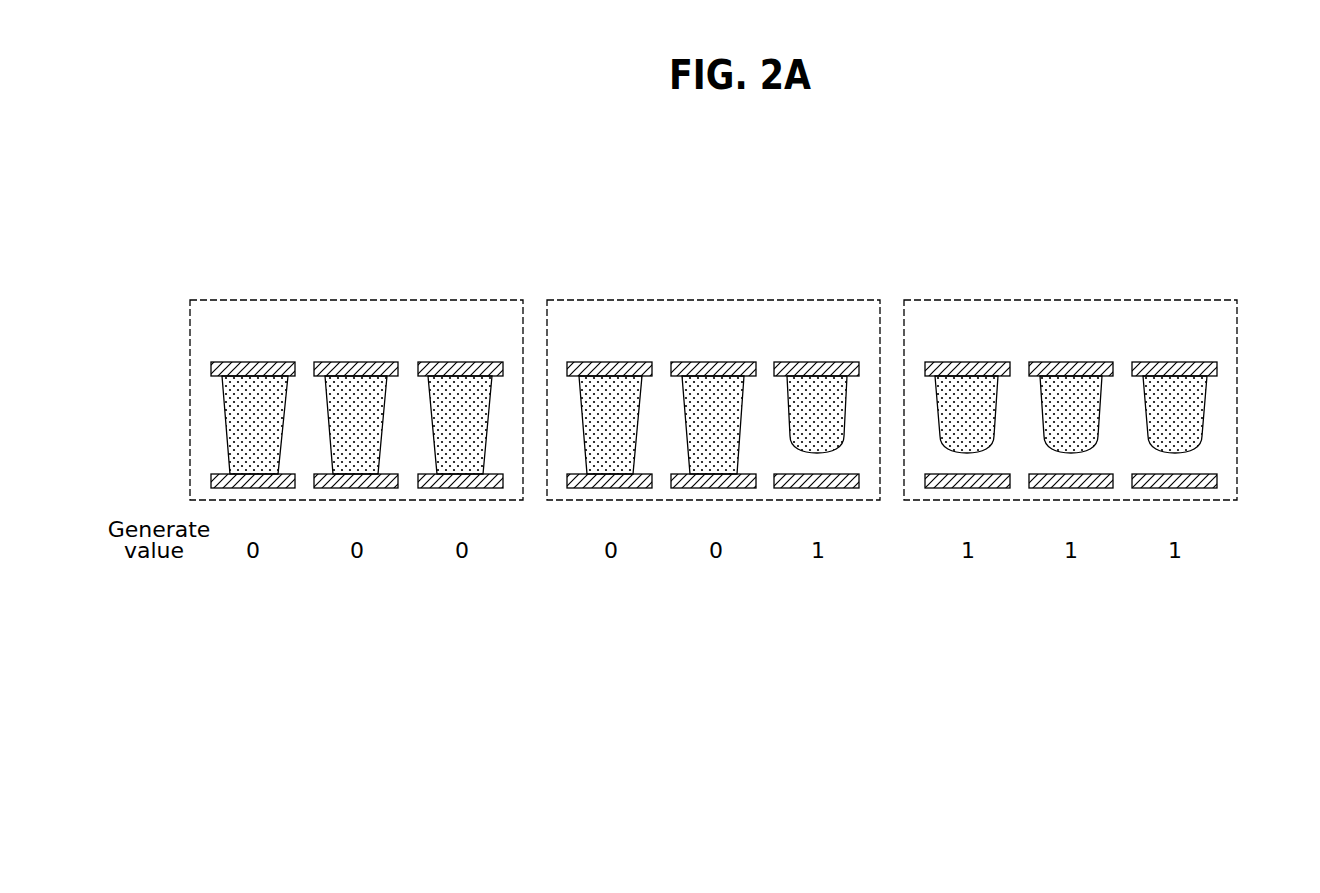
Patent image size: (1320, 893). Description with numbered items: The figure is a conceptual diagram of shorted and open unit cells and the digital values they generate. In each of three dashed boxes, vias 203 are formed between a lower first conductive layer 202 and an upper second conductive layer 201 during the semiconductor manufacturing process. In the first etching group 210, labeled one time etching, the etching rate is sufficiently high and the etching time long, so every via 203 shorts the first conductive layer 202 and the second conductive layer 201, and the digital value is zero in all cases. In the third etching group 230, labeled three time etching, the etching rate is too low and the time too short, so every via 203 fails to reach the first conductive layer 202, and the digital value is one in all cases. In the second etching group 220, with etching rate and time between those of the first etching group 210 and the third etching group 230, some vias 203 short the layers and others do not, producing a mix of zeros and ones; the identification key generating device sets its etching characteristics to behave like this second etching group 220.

The first etching group 210 is at (357, 298).
The second etching group 220 is at (714, 298).
The third etching group 230 is at (1071, 298).
The conductive layer 2 201 is at (1217, 367).
The conductive layer 1 202 is at (1217, 479).
The via 203 is at (1191, 418).